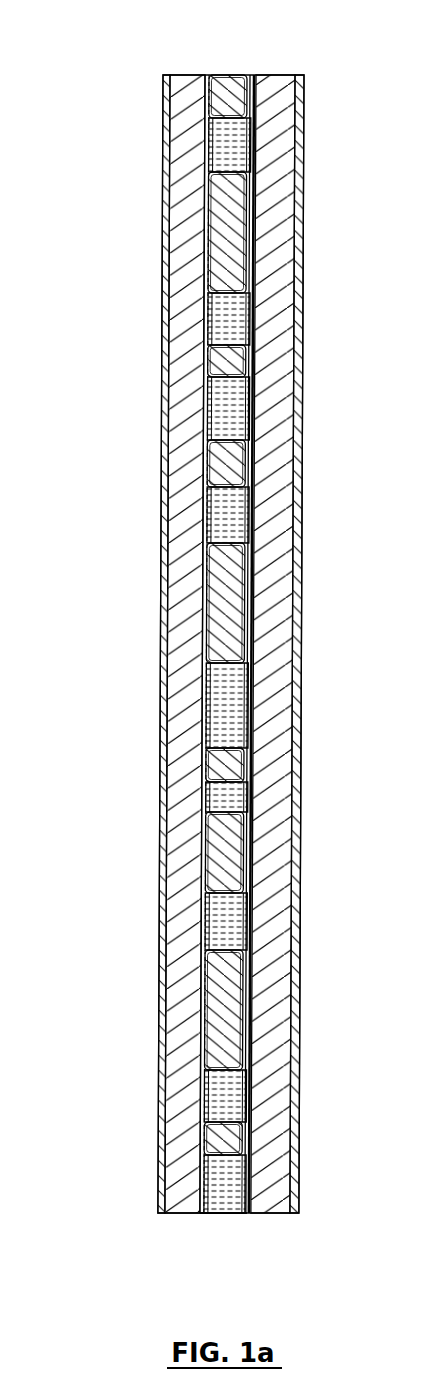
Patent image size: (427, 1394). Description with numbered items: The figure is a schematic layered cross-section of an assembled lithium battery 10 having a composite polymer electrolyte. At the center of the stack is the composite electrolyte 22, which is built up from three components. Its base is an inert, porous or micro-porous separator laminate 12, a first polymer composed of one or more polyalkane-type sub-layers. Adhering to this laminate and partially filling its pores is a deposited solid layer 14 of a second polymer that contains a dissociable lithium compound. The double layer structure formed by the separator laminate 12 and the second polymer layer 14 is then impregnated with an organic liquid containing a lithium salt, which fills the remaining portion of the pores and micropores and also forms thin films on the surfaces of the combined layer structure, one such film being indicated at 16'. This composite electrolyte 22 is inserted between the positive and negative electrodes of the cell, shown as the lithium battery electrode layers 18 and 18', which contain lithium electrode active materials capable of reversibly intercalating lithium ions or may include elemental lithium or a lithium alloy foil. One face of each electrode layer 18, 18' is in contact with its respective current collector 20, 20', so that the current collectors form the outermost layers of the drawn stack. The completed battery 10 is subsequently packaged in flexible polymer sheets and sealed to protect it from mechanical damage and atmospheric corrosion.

The battery 10 is at (366, 1172).
The inert porous separator laminate 12 is at (225, 100).
The deposited solid layer of second polymer 14 is at (256, 142).
The thin film of lithium salt containing organic liquid 16' is at (200, 1243).
The lithium battery electrode layer 18 is at (278, 618).
The lithium battery electrode layer 18' is at (180, 618).
The current collector 20 is at (332, 628).
The current collector 20' is at (134, 618).
The composite electrolyte 22 is at (205, 68).